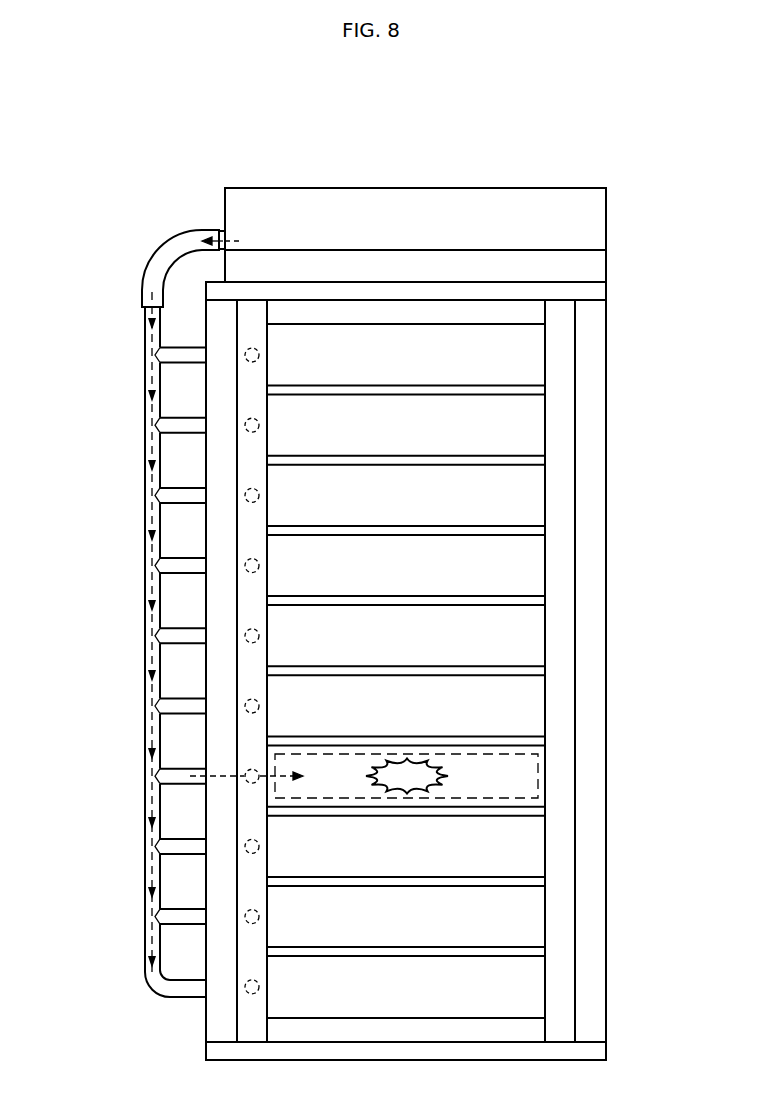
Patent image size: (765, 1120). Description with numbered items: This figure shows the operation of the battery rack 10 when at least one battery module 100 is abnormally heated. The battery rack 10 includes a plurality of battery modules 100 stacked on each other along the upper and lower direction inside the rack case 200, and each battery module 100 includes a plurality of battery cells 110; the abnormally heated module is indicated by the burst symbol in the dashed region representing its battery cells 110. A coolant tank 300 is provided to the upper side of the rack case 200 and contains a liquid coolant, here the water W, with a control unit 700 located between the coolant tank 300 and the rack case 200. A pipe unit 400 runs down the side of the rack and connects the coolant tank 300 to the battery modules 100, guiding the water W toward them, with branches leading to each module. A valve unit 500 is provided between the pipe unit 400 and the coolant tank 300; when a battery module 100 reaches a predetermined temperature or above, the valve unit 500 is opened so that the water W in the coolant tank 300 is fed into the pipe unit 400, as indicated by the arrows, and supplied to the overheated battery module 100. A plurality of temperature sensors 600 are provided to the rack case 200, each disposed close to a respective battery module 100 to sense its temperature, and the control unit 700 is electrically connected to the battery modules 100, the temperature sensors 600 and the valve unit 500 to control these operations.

The battery rack 10 is at (118, 150).
The battery module 100 is at (553, 758).
The battery cell 110 is at (538, 781).
The rack case 200 is at (600, 296).
The coolant tank 300 is at (600, 225).
The pipe unit 400 is at (122, 455).
The valve unit 500 is at (148, 218).
The temperature sensor 600 is at (244, 776).
The control unit 700 is at (600, 270).
The water W is at (252, 240).